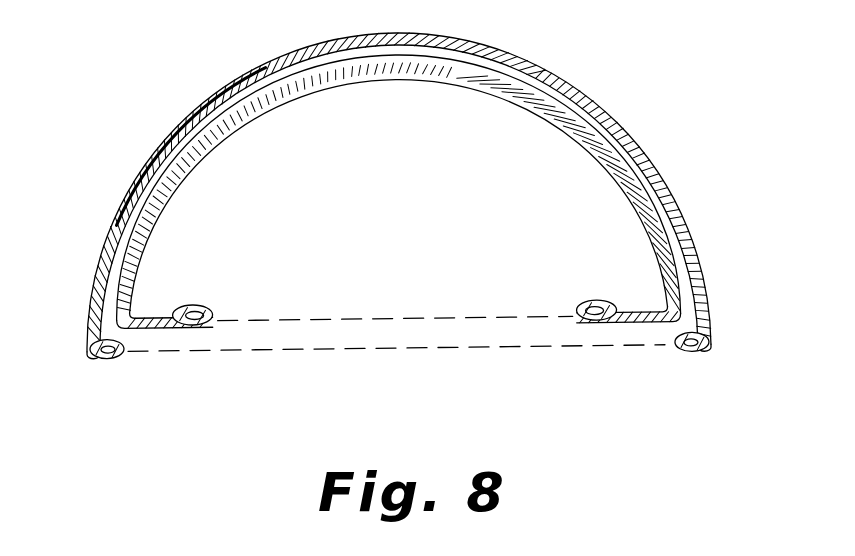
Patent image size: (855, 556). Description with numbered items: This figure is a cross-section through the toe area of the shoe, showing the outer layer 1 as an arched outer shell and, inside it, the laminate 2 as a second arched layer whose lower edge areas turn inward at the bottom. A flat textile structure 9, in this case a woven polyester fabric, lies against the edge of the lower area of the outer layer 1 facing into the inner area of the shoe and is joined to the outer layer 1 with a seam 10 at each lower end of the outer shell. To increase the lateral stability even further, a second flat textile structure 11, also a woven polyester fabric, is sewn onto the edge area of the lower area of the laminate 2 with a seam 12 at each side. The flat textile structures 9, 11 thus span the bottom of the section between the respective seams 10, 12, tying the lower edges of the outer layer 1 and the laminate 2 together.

The outer layer 1 is at (221, 88).
The laminate 2 is at (278, 100).
The flat textile structure 9 is at (365, 350).
The seam 10 is at (97, 358).
The second flat textile structure 11 is at (325, 317).
The seam 12 is at (207, 308).